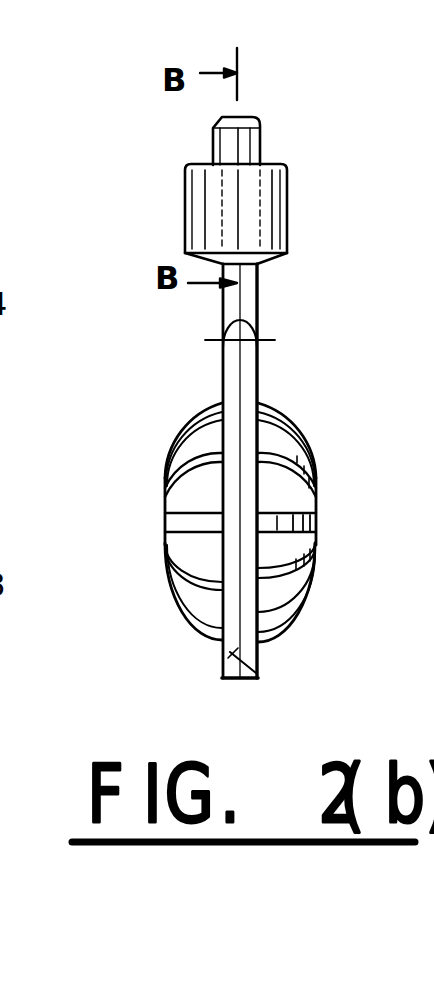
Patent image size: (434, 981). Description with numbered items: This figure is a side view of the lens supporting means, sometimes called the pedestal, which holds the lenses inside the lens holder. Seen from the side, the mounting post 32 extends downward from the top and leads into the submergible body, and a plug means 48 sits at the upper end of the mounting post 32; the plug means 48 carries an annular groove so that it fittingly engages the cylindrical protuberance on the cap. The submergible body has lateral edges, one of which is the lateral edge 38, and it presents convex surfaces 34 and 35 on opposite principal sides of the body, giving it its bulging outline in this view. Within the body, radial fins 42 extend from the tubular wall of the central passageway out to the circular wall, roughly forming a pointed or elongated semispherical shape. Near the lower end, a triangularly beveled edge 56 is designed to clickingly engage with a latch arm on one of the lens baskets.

The mounting post 32 is at (257, 294).
The convex surface 34 is at (163, 555).
The convex surface 35 is at (318, 533).
The lateral edge 38 is at (237, 373).
The radial fins 42 is at (284, 594).
The plug means 48 is at (288, 196).
The triangularly beveled edge 56 is at (228, 658).